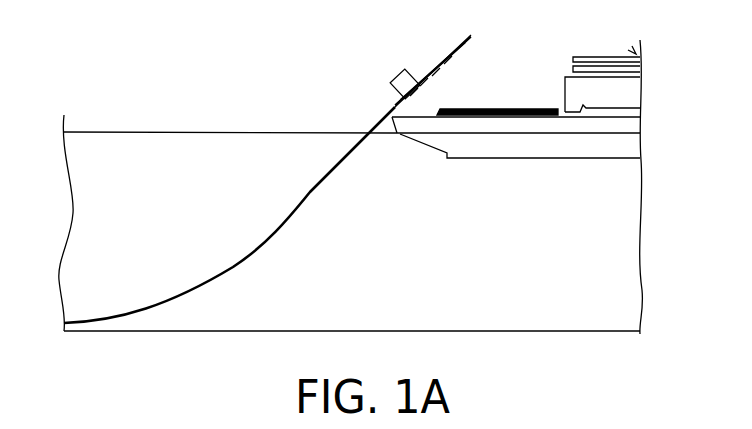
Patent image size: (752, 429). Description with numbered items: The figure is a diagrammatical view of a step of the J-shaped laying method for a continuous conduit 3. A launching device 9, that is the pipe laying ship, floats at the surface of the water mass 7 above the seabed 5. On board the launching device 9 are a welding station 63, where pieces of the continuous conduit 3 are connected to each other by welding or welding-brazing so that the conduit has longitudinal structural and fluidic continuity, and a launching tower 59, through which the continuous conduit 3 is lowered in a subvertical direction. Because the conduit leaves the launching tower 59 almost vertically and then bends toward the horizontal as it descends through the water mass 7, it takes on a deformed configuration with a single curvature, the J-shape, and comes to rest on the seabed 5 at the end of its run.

The continuous conduit 3 is at (308, 193).
The seabed 5 is at (413, 331).
The water mass 7 is at (507, 233).
The launching device 9 is at (598, 90).
The launching tower 59 is at (488, 105).
The welding station 63 is at (396, 80).